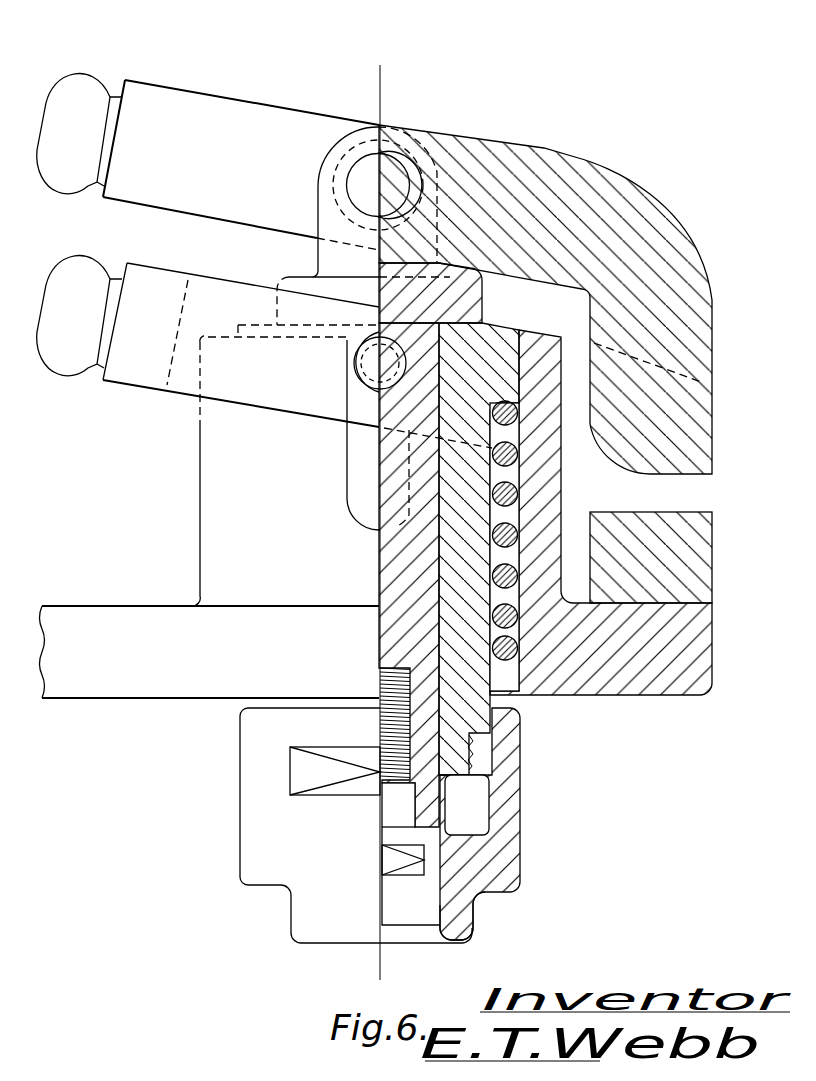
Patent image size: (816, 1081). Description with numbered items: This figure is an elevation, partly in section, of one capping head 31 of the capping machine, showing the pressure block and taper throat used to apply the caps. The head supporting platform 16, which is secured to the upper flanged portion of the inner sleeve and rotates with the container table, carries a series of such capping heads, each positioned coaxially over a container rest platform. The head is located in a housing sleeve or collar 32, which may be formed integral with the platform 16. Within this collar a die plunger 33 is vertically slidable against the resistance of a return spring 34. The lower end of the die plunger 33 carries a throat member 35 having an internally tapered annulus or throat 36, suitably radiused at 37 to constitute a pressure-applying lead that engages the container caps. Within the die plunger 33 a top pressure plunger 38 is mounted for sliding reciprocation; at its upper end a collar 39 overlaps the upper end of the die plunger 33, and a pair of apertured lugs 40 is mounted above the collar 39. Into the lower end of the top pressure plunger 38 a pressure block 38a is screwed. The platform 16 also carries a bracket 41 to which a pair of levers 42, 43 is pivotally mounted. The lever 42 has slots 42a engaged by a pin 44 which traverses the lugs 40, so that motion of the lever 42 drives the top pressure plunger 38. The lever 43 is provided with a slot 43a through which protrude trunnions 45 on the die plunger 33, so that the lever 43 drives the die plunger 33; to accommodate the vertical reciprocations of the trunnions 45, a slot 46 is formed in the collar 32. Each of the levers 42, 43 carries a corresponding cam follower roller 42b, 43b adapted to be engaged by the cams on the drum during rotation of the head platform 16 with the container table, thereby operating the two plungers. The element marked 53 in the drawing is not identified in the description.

The head supporting platform 16 is at (180, 690).
The capping head 31 is at (238, 817).
The housing sleeve or collar 32 is at (207, 502).
The die plunger 33 is at (449, 565).
The return spring 34 is at (512, 497).
The throat member 35 is at (504, 823).
The tapered annulus or throat 36 is at (474, 901).
The radiused lead 37 is at (447, 932).
The top pressure plunger 38 is at (410, 647).
The pressure block 38a is at (418, 916).
The collar 39 is at (465, 297).
The apertured lugs 40 is at (330, 260).
The bracket 41 is at (689, 536).
The lever 42 is at (494, 193).
The slots 42a is at (412, 185).
The cam follower roller 42b is at (83, 92).
The lever 43 is at (303, 398).
The slot 43a is at (345, 368).
The cam follower roller 43b is at (82, 265).
The pin 44 is at (364, 175).
The trunnions 45 is at (347, 363).
The slot 46 is at (360, 508).
The solenoid coil 53 is at (260, 746).